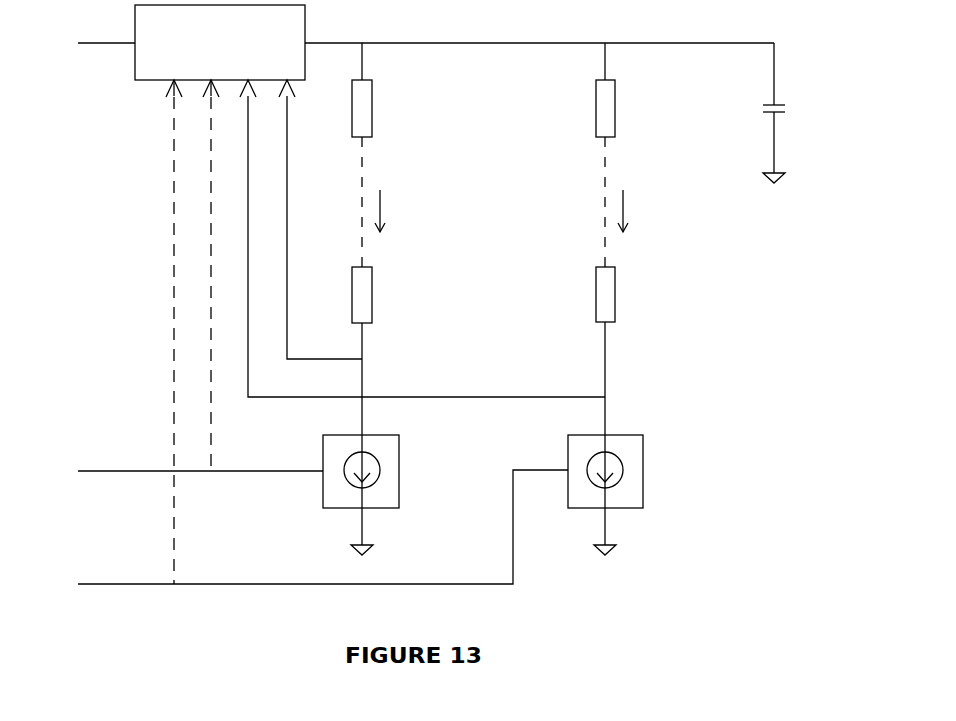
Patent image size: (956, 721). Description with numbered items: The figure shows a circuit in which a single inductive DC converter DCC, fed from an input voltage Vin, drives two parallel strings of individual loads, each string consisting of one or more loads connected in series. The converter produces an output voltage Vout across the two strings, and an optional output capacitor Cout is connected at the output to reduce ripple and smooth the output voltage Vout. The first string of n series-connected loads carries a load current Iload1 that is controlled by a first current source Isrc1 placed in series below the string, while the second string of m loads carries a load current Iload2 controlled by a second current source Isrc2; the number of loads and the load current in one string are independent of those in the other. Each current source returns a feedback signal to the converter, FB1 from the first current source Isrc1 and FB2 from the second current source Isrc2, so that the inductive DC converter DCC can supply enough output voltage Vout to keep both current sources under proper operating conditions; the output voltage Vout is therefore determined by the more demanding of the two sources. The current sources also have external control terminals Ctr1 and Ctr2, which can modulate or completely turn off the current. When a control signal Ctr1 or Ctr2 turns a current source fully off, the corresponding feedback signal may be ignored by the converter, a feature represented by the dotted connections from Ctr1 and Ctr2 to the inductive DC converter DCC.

The inductive DC converter DCC is at (211, 56).
The input voltage Vin is at (106, 30).
The output voltage Vout is at (539, 30).
The first load current Iload1 is at (402, 202).
The second load current Iload2 is at (646, 202).
The first feedback signal FB1 is at (324, 228).
The second feedback signal FB2 is at (426, 247).
The first current source Isrc1 is at (374, 495).
The second current source Isrc2 is at (618, 495).
The output capacitor Cout is at (800, 113).
The first control signal Ctr1 is at (200, 285).
The second control signal Ctr2 is at (323, 341).